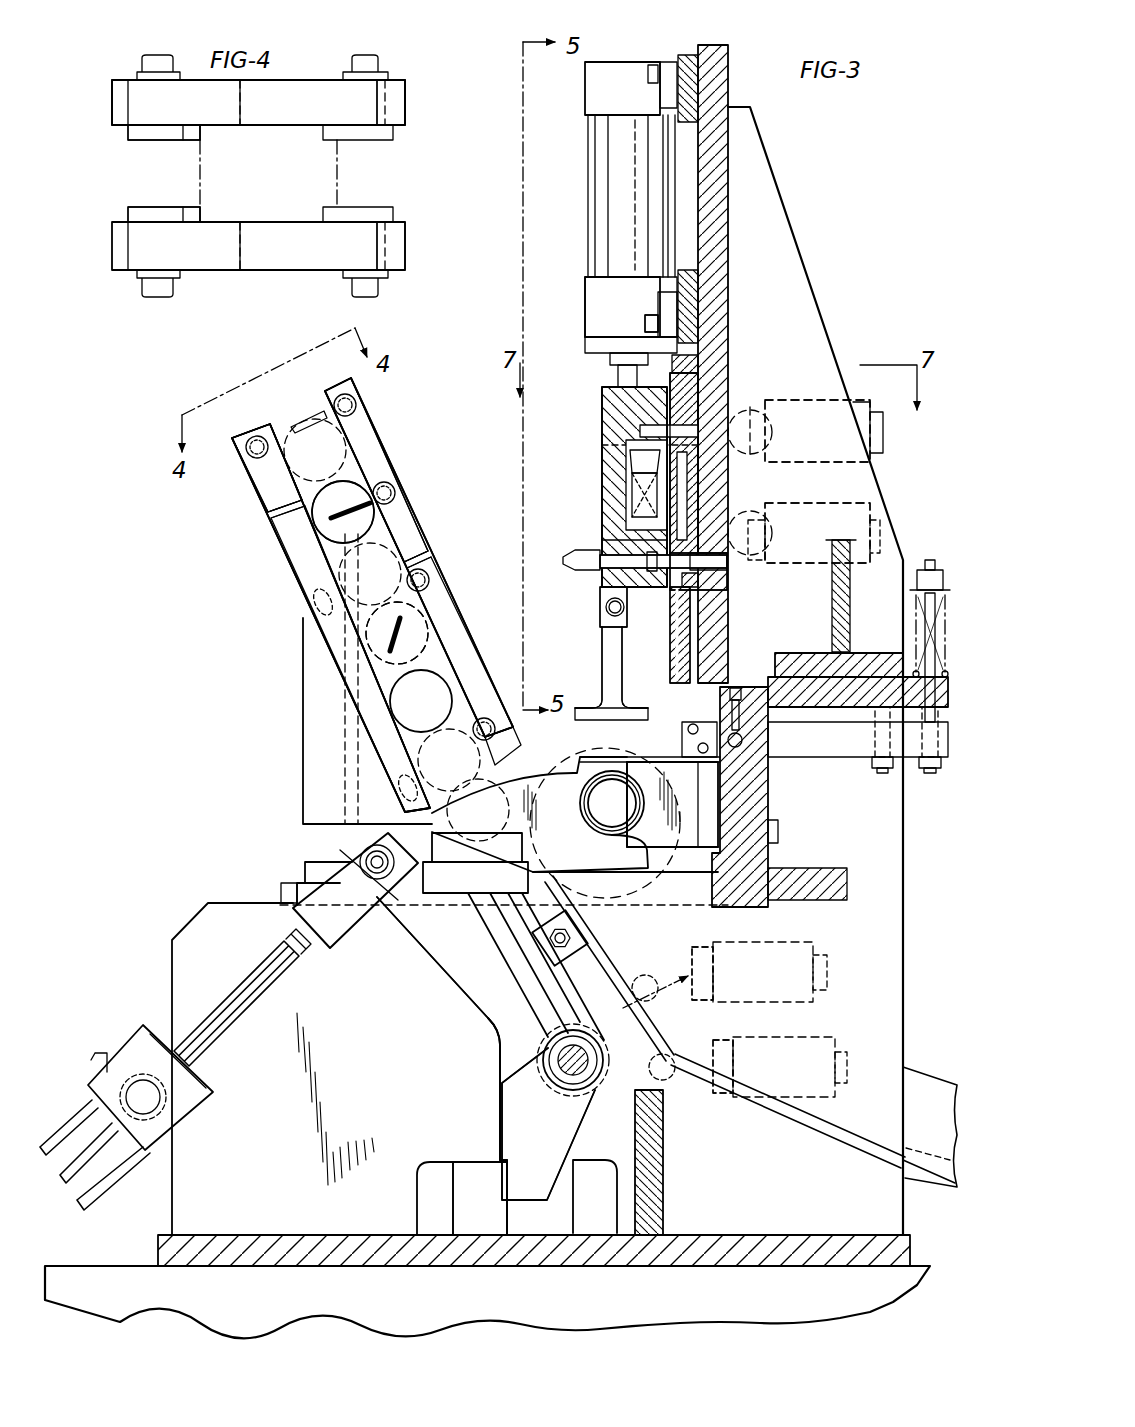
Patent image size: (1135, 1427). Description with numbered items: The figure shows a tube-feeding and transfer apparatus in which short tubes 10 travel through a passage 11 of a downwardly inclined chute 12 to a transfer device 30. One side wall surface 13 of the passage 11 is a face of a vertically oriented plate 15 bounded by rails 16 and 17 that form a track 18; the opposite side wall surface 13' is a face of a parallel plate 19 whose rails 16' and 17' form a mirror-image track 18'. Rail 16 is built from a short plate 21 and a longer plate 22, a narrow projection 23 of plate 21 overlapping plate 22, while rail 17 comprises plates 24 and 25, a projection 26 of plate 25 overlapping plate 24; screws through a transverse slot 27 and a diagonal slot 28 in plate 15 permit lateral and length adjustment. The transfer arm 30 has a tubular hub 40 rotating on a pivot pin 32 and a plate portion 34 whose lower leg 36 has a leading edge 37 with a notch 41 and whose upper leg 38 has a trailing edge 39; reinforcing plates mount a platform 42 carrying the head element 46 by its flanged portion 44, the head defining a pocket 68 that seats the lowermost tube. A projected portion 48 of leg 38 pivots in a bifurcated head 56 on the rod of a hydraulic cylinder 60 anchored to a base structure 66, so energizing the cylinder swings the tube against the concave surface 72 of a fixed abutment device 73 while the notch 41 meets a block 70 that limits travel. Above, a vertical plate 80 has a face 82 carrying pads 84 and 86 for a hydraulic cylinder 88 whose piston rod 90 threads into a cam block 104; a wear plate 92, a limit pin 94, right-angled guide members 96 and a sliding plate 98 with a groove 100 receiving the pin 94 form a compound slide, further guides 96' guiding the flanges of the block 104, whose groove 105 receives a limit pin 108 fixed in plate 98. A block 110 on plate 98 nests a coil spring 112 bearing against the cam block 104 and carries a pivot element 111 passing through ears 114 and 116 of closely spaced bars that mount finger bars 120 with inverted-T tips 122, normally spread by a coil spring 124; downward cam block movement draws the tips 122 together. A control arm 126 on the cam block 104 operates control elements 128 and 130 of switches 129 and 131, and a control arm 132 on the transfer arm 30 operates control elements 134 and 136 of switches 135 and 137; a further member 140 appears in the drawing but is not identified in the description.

In FIG. 4, the tubes 10 is at (196, 170).
In FIG. 3, the tubes 10 is at (322, 468).
In FIG. 4, the passage 11 is at (272, 160).
In FIG. 4, the chute 12 is at (405, 70).
In FIG. 3, the chute 12 is at (380, 411).
In FIG. 4, the side wall surface 13 is at (191, 146).
In FIG. 4, the opposite side wall surface 13' is at (196, 200).
In FIG. 4, the plate 15 is at (150, 95).
In FIG. 3, the plate 15 is at (230, 465).
In FIG. 4, the rail 16 is at (138, 148).
In FIG. 3, the rail 16 is at (251, 456).
In FIG. 4, the rail 16' is at (138, 204).
In FIG. 4, the rail 17 is at (390, 141).
In FIG. 3, the rail 17 is at (372, 452).
In FIG. 4, the rail 17' is at (395, 206).
In FIG. 4, the track 18 is at (322, 106).
In FIG. 4, the track 18' is at (322, 238).
In FIG. 4, the plate 19 is at (198, 250).
In FIG. 3, the plate 21 is at (255, 482).
In FIG. 3, the plate 22 is at (305, 552).
In FIG. 3, the projection 23 is at (300, 507).
In FIG. 3, the plate 24 is at (364, 437).
In FIG. 3, the plate 25 is at (432, 610).
In FIG. 3, the projection 26 is at (385, 533).
In FIG. 3, the slot 27 is at (320, 407).
In FIG. 3, the slot 28 is at (420, 638).
In FIG. 3, the transfer device 30 is at (474, 1012).
In FIG. 3, the pivot pin 32 is at (560, 1062).
In FIG. 3, the plate portion 34 is at (502, 1001).
In FIG. 3, the leg portion 36 is at (553, 1165).
In FIG. 3, the leading edge 37 is at (499, 1083).
In FIG. 3, the leg portion 38 is at (422, 938).
In FIG. 3, the trailing edge 39 is at (443, 970).
In FIG. 3, the tubular hub 40 is at (560, 1085).
In FIG. 3, the rectangular notch 41 is at (507, 1180).
In FIG. 3, the platform 42 is at (468, 891).
In FIG. 3, the portion 44 is at (492, 870).
In FIG. 3, the element 46 is at (578, 860).
In FIG. 3, the outwardly projected portion 48 is at (340, 860).
In FIG. 3, the bifurcated head 56 is at (390, 905).
In FIG. 3, the hydraulic cylinder 60 is at (60, 1120).
In FIG. 3, the base structure 66 is at (125, 1265).
In FIG. 3, the pocket 68 is at (568, 808).
In FIG. 3, the block-like structure 70 is at (490, 1217).
In FIG. 3, the concave surface portion 72 is at (628, 770).
In FIG. 3, the fixed abutment device 73 is at (665, 840).
In FIG. 3, the vertical plate structure 80 is at (732, 68).
In FIG. 3, the face 82 is at (700, 190).
In FIG. 3, the pad 84 is at (684, 55).
In FIG. 3, the pad 86 is at (693, 282).
In FIG. 3, the hydraulic cylinder 88 is at (625, 180).
In FIG. 3, the piston rod 90 is at (628, 368).
In FIG. 3, the wear plate 92 is at (698, 364).
In FIG. 3, the limit pin 94 is at (702, 565).
In FIG. 3, the guide member 96 is at (660, 641).
In FIG. 3, the slide type guides 96' is at (631, 311).
In FIG. 3, the plate 98 is at (692, 592).
In FIG. 3, the groove 100 is at (686, 482).
In FIG. 3, the cam block 104 is at (604, 400).
In FIG. 3, the groove 105 is at (700, 383).
In FIG. 3, the limit pin 108 is at (655, 429).
In FIG. 3, the block 110 is at (640, 535).
In FIG. 3, the bearing type pivot element 111 is at (598, 566).
In FIG. 3, the coil spring 112 is at (640, 500).
In FIG. 3, the ear 114 is at (622, 592).
In FIG. 3, the ear 116 is at (607, 585).
In FIG. 3, the bars 120 is at (603, 675).
In FIG. 3, the lowermost ends 122 is at (650, 709).
In FIG. 3, the coil spring 124 is at (608, 620).
In FIG. 3, the control arm 126 is at (606, 477).
In FIG. 3, the control element 128 is at (732, 410).
In FIG. 3, the switch 129 is at (836, 400).
In FIG. 3, the control element 130 is at (766, 548).
In FIG. 3, the switch 131 is at (836, 502).
In FIG. 3, the control arm 132 is at (625, 1062).
In FIG. 3, the control element 134 is at (655, 970).
In FIG. 3, the switch 135 is at (797, 945).
In FIG. 3, the control element 136 is at (672, 1085).
In FIG. 3, the switch 137 is at (807, 1035).
In FIG. 3, the arm 140 is at (800, 1123).